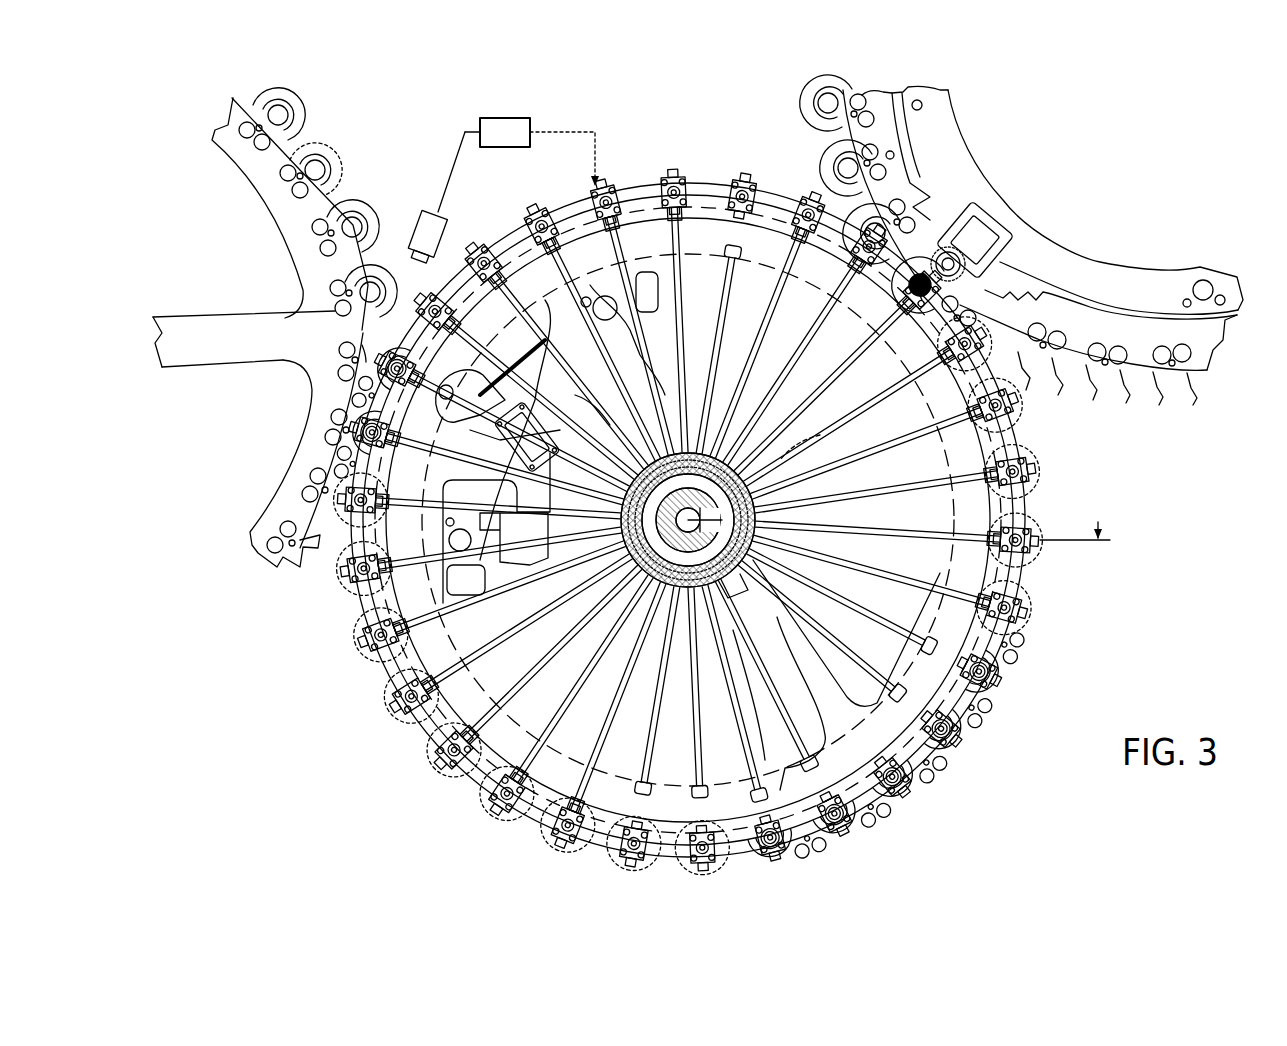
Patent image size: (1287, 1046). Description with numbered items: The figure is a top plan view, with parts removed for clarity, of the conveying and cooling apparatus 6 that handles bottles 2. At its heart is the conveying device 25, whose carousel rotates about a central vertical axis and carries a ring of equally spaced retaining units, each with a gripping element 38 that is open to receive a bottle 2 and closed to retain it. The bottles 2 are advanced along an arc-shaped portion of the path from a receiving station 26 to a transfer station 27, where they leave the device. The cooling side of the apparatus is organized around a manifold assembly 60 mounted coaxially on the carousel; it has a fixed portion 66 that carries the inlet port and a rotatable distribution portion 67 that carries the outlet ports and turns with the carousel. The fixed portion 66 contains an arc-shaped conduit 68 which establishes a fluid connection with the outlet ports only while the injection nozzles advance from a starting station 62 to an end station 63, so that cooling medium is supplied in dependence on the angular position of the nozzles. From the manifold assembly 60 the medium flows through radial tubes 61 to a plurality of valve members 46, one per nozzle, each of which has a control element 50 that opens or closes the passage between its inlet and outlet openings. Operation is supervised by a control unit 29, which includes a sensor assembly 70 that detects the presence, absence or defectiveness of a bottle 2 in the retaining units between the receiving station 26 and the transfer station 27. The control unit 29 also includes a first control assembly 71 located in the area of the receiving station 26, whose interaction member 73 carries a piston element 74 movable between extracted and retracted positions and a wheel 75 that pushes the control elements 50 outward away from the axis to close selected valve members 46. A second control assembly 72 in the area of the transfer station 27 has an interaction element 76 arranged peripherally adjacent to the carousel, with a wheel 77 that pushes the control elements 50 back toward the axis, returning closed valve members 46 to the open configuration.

The bottles 2 is at (243, 99).
The conveying and cooling apparatus 6 is at (200, 190).
The conveying device 25 is at (668, 182).
The receiving station 26 is at (360, 333).
The transfer station 27 is at (920, 285).
The control unit 29 is at (470, 122).
The gripping element 38 is at (985, 665).
The valve members 46 is at (455, 690).
The control element 50 is at (392, 710).
The manifold assembly 60 is at (698, 462).
The tubes 61 is at (998, 525).
The starting station 62 is at (360, 396).
The end station 63 is at (960, 305).
The fixed portion 66 is at (592, 408).
The rotatable distribution portion 67 is at (800, 442).
The conduit 68 is at (730, 572).
The sensor assembly 70 is at (426, 240).
The first control assembly 71 is at (505, 380).
The second control assembly 72 is at (1012, 215).
The interaction member 73 is at (441, 450).
The piston element 74 is at (492, 403).
The wheel 75 is at (478, 372).
The interaction element 76 is at (975, 232).
The wheel 77 is at (962, 288).